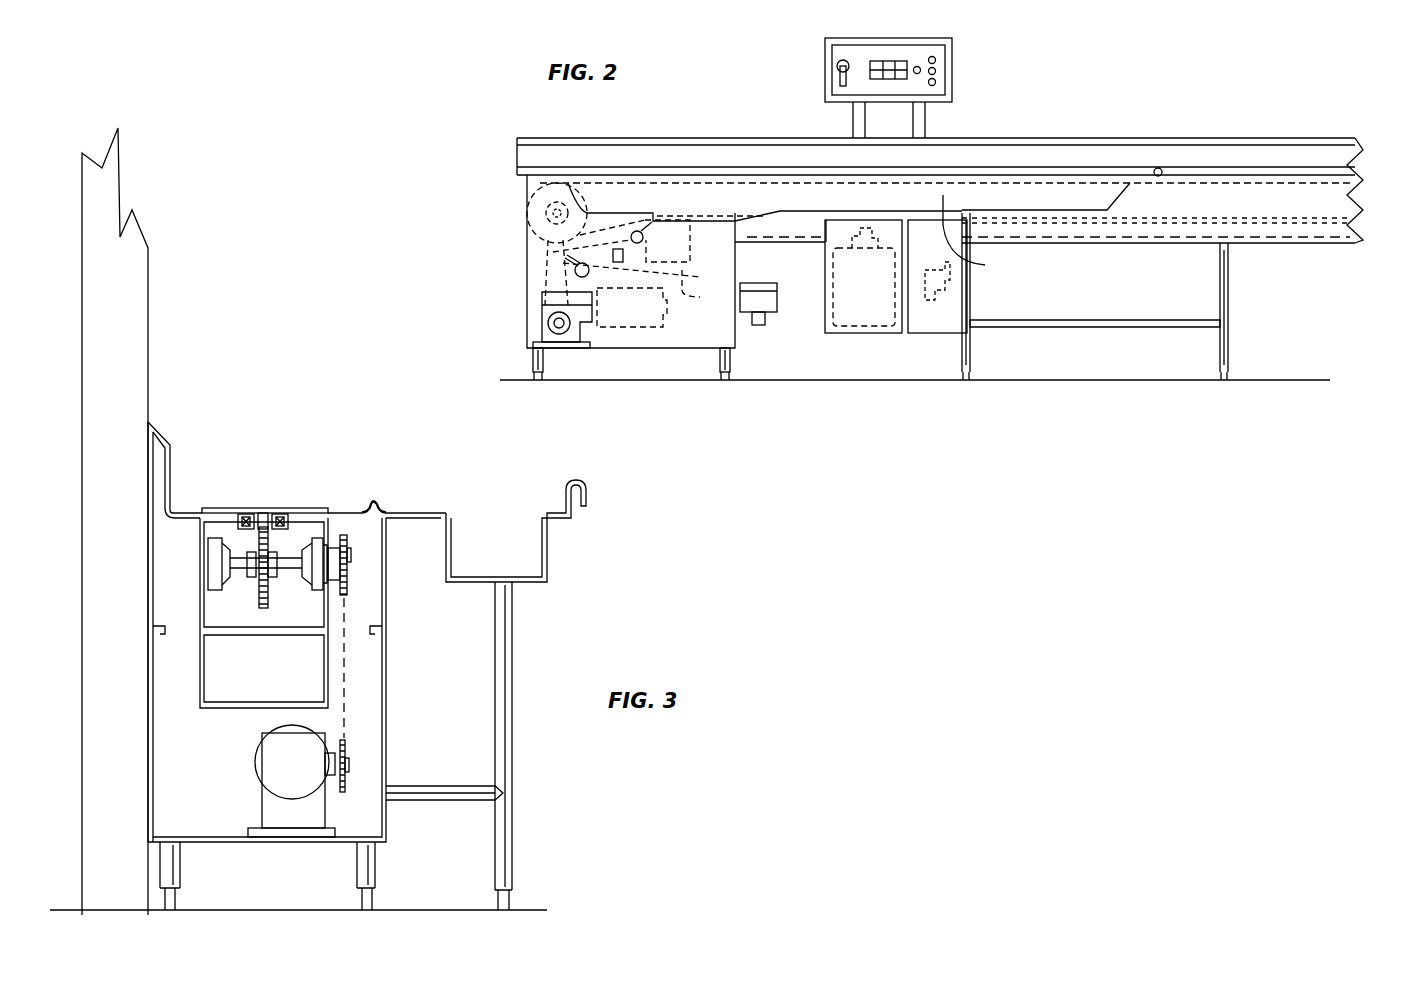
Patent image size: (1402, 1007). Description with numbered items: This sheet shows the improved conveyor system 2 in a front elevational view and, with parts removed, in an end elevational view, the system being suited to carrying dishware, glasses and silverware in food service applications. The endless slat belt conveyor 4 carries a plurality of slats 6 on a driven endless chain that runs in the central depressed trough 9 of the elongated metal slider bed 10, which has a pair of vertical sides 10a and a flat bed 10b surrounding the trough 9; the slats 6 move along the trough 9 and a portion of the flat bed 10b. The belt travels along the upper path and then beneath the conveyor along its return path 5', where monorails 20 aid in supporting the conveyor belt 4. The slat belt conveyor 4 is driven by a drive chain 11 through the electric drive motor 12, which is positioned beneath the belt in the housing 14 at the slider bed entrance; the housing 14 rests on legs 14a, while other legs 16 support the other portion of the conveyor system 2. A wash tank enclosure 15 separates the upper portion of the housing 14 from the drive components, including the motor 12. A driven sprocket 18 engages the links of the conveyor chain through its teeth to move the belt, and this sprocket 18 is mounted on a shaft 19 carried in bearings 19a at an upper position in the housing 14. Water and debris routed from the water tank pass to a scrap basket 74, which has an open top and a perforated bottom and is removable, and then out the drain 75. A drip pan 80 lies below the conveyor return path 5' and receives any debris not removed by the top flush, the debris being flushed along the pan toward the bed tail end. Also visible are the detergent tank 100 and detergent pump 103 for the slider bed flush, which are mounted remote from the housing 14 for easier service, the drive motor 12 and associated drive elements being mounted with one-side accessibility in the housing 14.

In FIG. 2, the conveyor system 2 is at (1072, 135).
In FIG. 3, the conveyor system 2 is at (300, 503).
In FIG. 2, the endless slat belt conveyor 4 is at (617, 183).
In FIG. 3, the endless slat belt conveyor 4 is at (246, 512).
In FIG. 2, the return path 5' is at (780, 246).
In FIG. 3, the slats 6 is at (262, 512).
In FIG. 3, the central depressed trough 9 is at (276, 524).
In FIG. 3, the slider bed 10 is at (346, 512).
In FIG. 3, the vertical sides 10a is at (172, 455).
In FIG. 3, the flat bed 10b is at (183, 512).
In FIG. 2, the drive chain 11 is at (553, 252).
In FIG. 2, the drive motor 12 is at (620, 320).
In FIG. 3, the drive motor 12 is at (290, 780).
In FIG. 2, the housing 14 is at (705, 322).
In FIG. 3, the housing 14 is at (372, 718).
In FIG. 2, the legs 14a is at (543, 364).
In FIG. 3, the legs 14a is at (180, 868).
In FIG. 2, the wash tank enclosure 15 is at (682, 297).
In FIG. 3, the wash tank enclosure 15 is at (328, 617).
In FIG. 2, the legs 16 is at (965, 307).
In FIG. 2, the driven sprocket 18 is at (537, 213).
In FIG. 3, the driven sprocket 18 is at (257, 597).
In FIG. 3, the shaft 19 is at (287, 573).
In FIG. 3, the bearings 19a is at (212, 563).
In FIG. 2, the monorails 20 is at (1355, 222).
In FIG. 2, the scrap basket 74 is at (777, 297).
In FIG. 2, the drain 75 is at (765, 318).
In FIG. 2, the drip pan 80 is at (978, 239).
In FIG. 2, the detergent tank 100 is at (862, 312).
In FIG. 2, the detergent pump 103 is at (947, 312).